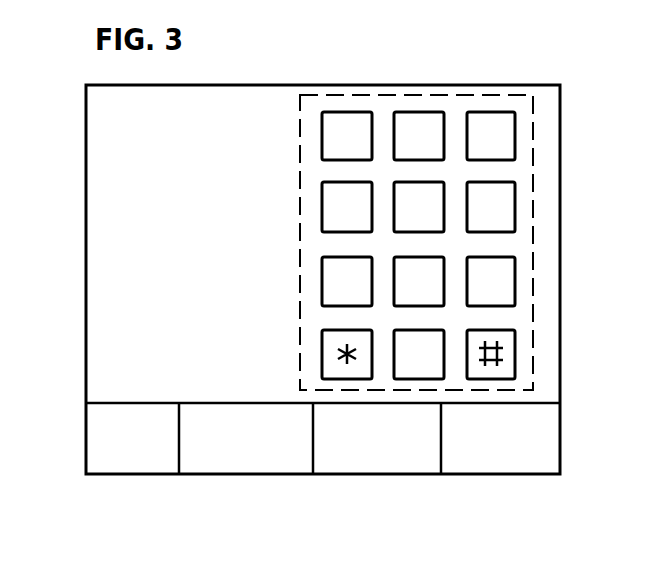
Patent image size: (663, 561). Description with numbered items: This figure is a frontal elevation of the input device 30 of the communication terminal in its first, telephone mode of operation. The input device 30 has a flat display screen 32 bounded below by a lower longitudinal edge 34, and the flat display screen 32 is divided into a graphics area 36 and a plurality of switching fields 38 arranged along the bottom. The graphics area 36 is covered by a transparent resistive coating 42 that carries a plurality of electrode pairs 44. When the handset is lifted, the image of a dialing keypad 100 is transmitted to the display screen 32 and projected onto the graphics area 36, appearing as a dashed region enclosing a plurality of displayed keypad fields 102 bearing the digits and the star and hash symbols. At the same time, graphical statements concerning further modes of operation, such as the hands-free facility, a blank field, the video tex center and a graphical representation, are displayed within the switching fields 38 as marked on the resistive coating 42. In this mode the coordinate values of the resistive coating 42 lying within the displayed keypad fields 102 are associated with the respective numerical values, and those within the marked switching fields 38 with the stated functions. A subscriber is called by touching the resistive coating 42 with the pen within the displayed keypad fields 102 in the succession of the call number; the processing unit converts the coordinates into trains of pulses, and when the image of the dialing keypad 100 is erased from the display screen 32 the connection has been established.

The input device 30 is at (560, 268).
The flat display screen 32 is at (103, 138).
The lower longitudinal edge 34 is at (174, 474).
The graphics area 36 is at (103, 270).
The switching fields 38 is at (120, 474).
The transparent resistive coating 42 is at (86, 181).
The electrode pairs 44 is at (86, 108).
The dialing keypad 100 is at (405, 95).
The displayed keypad fields 102 is at (322, 152).